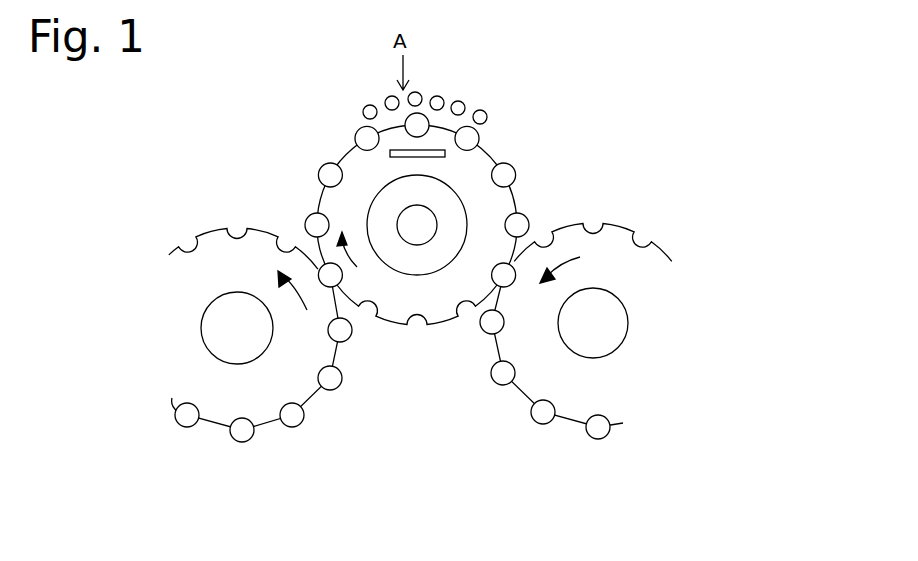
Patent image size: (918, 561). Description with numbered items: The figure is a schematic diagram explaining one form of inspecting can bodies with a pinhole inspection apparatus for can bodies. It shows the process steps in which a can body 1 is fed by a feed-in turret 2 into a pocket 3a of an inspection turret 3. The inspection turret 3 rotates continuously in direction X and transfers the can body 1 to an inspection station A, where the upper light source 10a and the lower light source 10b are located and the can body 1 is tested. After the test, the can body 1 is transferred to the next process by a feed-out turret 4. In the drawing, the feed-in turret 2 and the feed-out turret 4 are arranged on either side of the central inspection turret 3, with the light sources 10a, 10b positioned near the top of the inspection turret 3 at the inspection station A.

The can body 1 is at (240, 433).
The feed-in turret 2 is at (250, 390).
The inspection turret 3 is at (355, 172).
The pocket 3a is at (417, 327).
The feed-out turret 4 is at (645, 287).
The upper light source 10a is at (488, 113).
The lower light source 10b is at (418, 155).